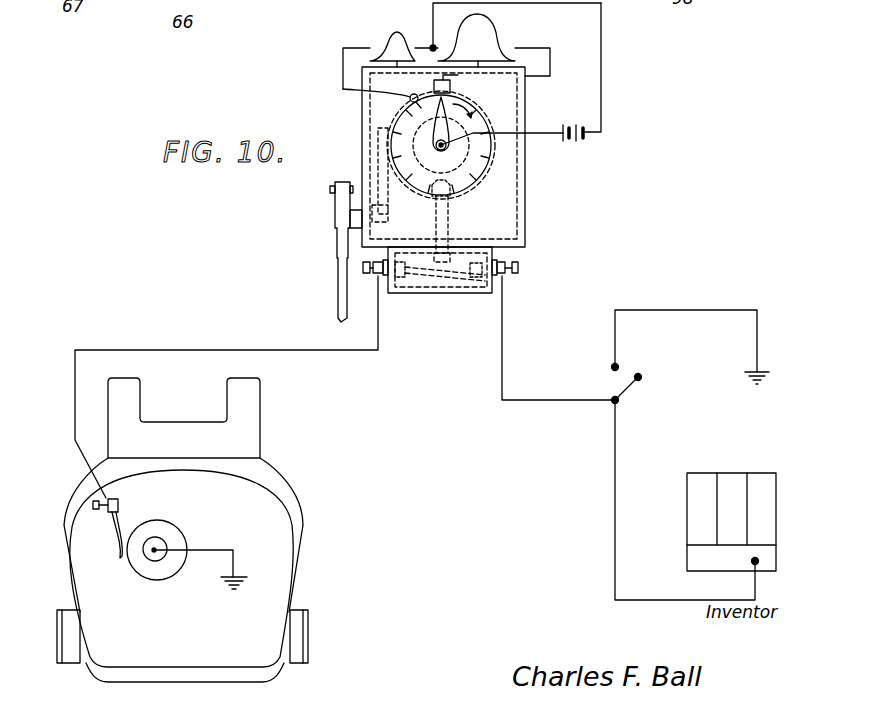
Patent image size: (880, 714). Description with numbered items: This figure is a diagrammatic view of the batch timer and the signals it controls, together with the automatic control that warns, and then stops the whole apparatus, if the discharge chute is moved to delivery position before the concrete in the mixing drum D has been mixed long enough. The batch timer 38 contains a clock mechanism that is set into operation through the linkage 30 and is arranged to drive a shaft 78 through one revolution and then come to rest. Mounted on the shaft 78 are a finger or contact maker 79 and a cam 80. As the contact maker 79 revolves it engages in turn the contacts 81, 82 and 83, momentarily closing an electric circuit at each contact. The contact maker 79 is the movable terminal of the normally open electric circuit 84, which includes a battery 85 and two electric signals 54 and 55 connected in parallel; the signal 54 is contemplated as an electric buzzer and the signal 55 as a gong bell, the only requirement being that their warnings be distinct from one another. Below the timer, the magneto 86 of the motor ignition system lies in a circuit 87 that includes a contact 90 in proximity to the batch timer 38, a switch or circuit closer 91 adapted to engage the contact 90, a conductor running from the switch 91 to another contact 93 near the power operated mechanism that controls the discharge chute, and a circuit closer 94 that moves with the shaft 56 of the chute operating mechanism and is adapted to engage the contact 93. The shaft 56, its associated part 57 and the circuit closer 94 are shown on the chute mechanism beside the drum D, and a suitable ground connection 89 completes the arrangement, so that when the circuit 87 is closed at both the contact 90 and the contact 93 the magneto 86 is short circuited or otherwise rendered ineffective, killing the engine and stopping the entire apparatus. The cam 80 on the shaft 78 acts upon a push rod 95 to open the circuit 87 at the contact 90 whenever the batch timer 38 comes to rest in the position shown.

The linkage 30 is at (340, 282).
The batch timer 38 is at (362, 106).
The electric signal 54 is at (388, 33).
The electric signal 55 is at (495, 28).
The shaft of the discharge chute operating mechanism 56 is at (153, 563).
The shaft 57 is at (158, 543).
The shaft 78 is at (441, 145).
The contact maker 79 is at (447, 113).
The cam 80 is at (463, 183).
The contact 81 is at (412, 100).
The contact 82 is at (433, 90).
The contact 83 is at (452, 87).
The electric circuit 84 is at (602, 65).
The battery 85 is at (583, 143).
The magneto 86 is at (695, 512).
The circuit 87 is at (503, 327).
The ground connection 89 is at (750, 382).
The contact 90 is at (507, 283).
The switch 91 is at (470, 280).
The contact 93 is at (117, 540).
The circuit closer 94 is at (175, 568).
The push rod 95 is at (450, 218).
The drum D is at (253, 517).